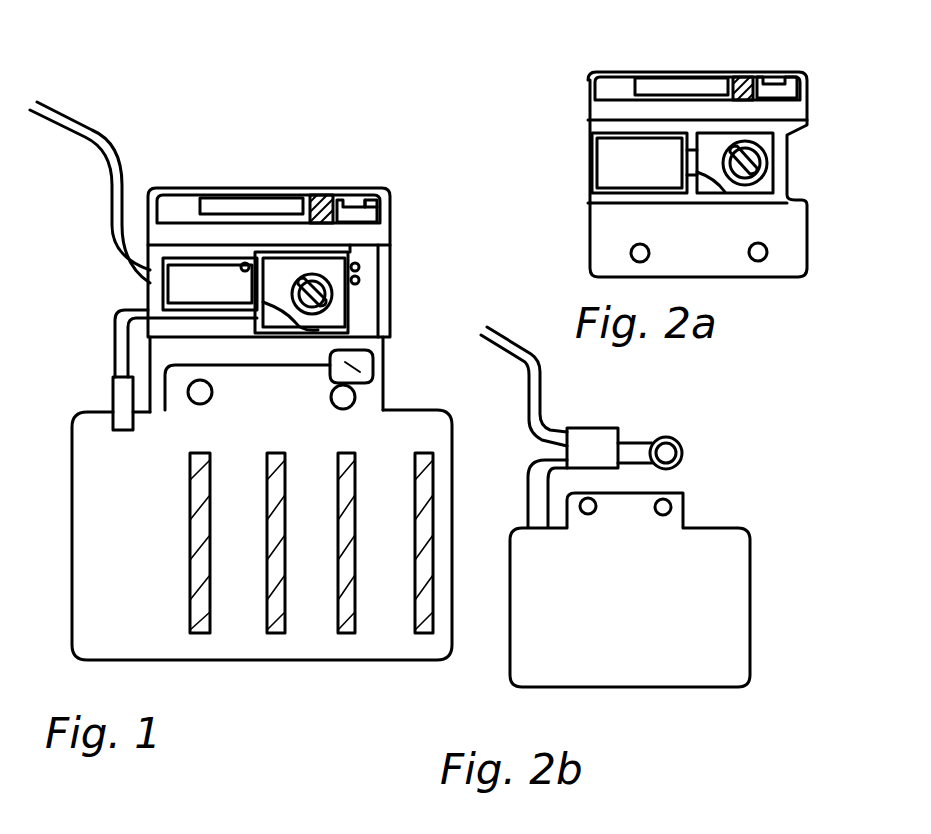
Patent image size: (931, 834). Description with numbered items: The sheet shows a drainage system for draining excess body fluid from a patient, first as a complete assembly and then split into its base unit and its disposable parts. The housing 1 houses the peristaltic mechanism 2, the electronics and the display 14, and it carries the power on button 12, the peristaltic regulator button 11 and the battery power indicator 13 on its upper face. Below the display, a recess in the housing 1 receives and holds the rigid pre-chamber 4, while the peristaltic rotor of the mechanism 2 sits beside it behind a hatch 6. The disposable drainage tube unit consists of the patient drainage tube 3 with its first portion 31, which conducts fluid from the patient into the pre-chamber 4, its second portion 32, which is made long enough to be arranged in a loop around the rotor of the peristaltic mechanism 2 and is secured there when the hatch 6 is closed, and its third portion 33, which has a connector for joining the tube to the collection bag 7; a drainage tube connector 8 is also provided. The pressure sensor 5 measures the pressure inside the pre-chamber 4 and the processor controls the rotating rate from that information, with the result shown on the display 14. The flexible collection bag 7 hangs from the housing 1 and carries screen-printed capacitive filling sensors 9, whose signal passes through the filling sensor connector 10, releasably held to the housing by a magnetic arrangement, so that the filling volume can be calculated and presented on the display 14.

In FIG. 1, the housing 1 is at (220, 237).
In FIG. 2A, the housing 1 is at (607, 115).
In FIG. 1, the peristaltic mechanism 2 is at (338, 282).
In FIG. 2A, the peristaltic mechanism 2 is at (728, 160).
In FIG. 1, the patient drainage tube 3 is at (105, 145).
In FIG. 1, the pre-chamber 4 is at (147, 288).
In FIG. 1, the pressure sensor 5 is at (308, 190).
In FIG. 1, the hatch 6 is at (362, 306).
In FIG. 1, the collection bag 7 is at (115, 473).
In FIG. 2B, the collection bag 7 is at (617, 627).
In FIG. 1, the drainage tube connector 8 is at (115, 390).
In FIG. 1, the screen-printed liquid filling sensors 9 is at (415, 627).
In FIG. 1, the filling sensor connector 10 is at (392, 352).
In FIG. 2B, the filling sensor connector 10 is at (688, 493).
In FIG. 1, the pressure regulator button 11 is at (342, 191).
In FIG. 1, the power on button 12 is at (362, 196).
In FIG. 1, the battery power indicator 13 is at (358, 262).
In FIG. 1, the display unit 14 is at (247, 207).
In FIG. 2B, the drainage tube first portion 31 is at (523, 395).
In FIG. 2B, the drainage tube second portion 32 is at (686, 450).
In FIG. 2B, the drainage tube third portion 33 is at (523, 467).